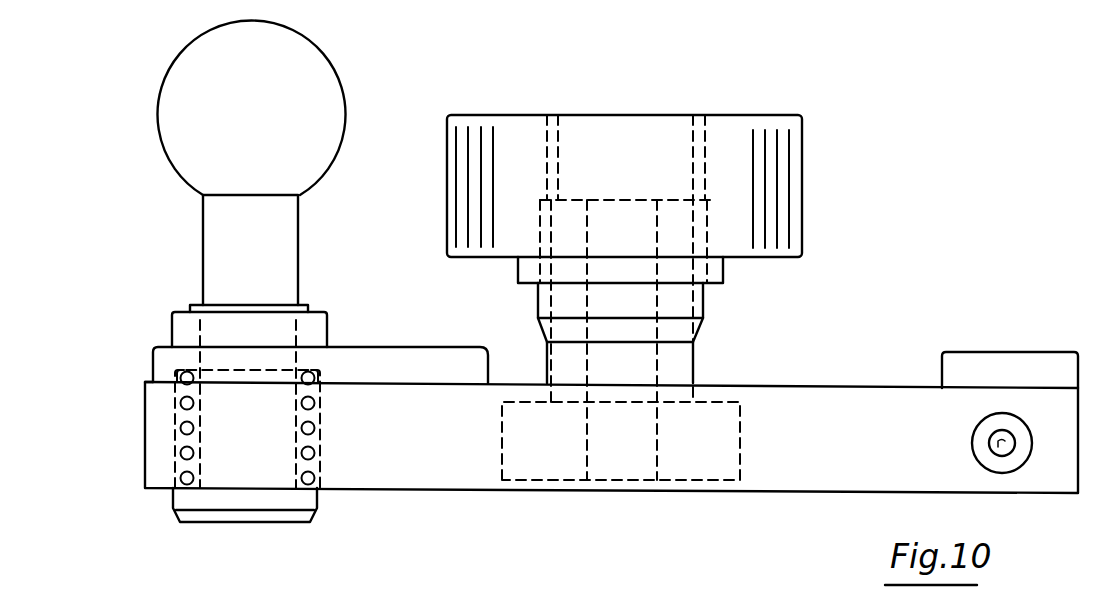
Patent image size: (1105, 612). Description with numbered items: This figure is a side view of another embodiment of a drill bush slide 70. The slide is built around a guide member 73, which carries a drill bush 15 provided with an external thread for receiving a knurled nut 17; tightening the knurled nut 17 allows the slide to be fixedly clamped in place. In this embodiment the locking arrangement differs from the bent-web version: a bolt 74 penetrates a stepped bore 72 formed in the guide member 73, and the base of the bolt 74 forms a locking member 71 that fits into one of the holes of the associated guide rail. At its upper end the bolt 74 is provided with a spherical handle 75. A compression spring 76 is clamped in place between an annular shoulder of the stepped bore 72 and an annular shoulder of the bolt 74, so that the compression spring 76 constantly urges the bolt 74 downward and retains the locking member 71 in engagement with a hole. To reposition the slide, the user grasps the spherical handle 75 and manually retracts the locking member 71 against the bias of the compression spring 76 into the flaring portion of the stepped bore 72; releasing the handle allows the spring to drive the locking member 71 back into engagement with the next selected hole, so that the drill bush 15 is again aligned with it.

The drill bush 15 is at (702, 303).
The knurled nut 17 is at (785, 188).
The drill bush slide 70 is at (883, 415).
The locking member 71 is at (248, 498).
The stepped bore 72 is at (291, 330).
The guide member 73 is at (415, 463).
The bolt 74 is at (217, 250).
The spherical handle 75 is at (322, 98).
The compression spring 76 is at (180, 427).